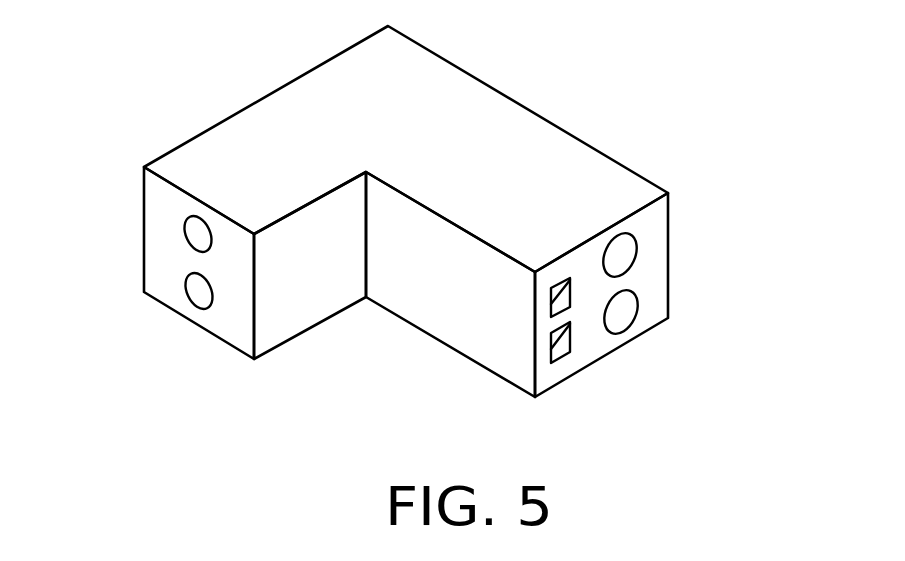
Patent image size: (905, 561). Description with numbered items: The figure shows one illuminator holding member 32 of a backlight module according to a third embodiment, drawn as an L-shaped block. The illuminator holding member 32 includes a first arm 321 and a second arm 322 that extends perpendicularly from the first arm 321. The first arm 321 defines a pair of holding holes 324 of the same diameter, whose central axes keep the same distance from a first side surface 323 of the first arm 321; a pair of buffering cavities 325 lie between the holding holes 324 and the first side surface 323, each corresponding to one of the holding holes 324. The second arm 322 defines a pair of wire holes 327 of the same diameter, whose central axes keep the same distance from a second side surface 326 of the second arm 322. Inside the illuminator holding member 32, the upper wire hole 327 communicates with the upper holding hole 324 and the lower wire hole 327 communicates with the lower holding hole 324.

The illuminator holding member 32 is at (407, 236).
The first arm 321 is at (562, 153).
The second arm 322 is at (232, 167).
The first side surface 323 is at (504, 290).
The holding holes 324 is at (623, 250).
The buffering cavities 325 is at (568, 340).
The second side surface 326 is at (297, 302).
The wire holes 327 is at (197, 233).